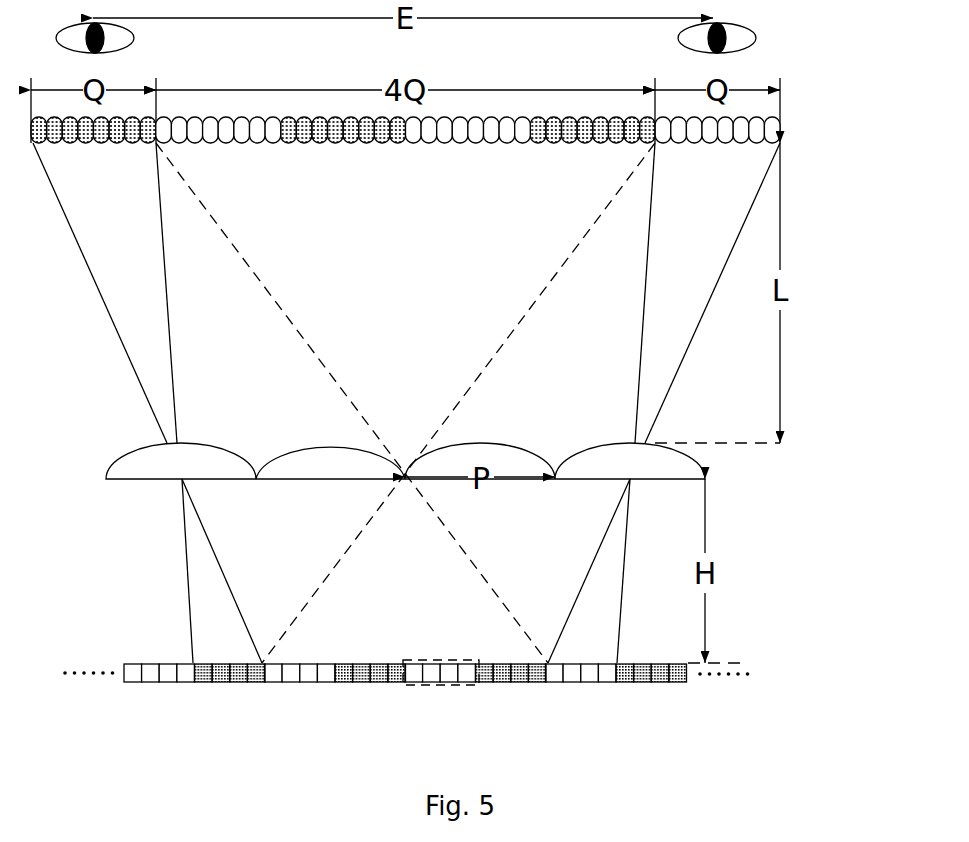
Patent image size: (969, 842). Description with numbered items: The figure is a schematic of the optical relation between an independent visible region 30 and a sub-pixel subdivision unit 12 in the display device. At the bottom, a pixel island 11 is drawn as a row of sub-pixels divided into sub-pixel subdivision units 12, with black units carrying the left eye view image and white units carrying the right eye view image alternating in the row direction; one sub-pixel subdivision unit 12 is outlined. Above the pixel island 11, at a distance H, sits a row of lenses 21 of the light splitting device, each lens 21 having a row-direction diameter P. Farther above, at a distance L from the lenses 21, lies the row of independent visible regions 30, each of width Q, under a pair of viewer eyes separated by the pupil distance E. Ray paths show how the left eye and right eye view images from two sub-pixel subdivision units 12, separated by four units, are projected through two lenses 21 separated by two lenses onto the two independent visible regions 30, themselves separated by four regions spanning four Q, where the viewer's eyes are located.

The independent visible region 30 is at (780, 128).
The lens 21 is at (705, 461).
The pixel island 11 is at (757, 674).
The sub-pixel subdivision unit 12 is at (458, 686).